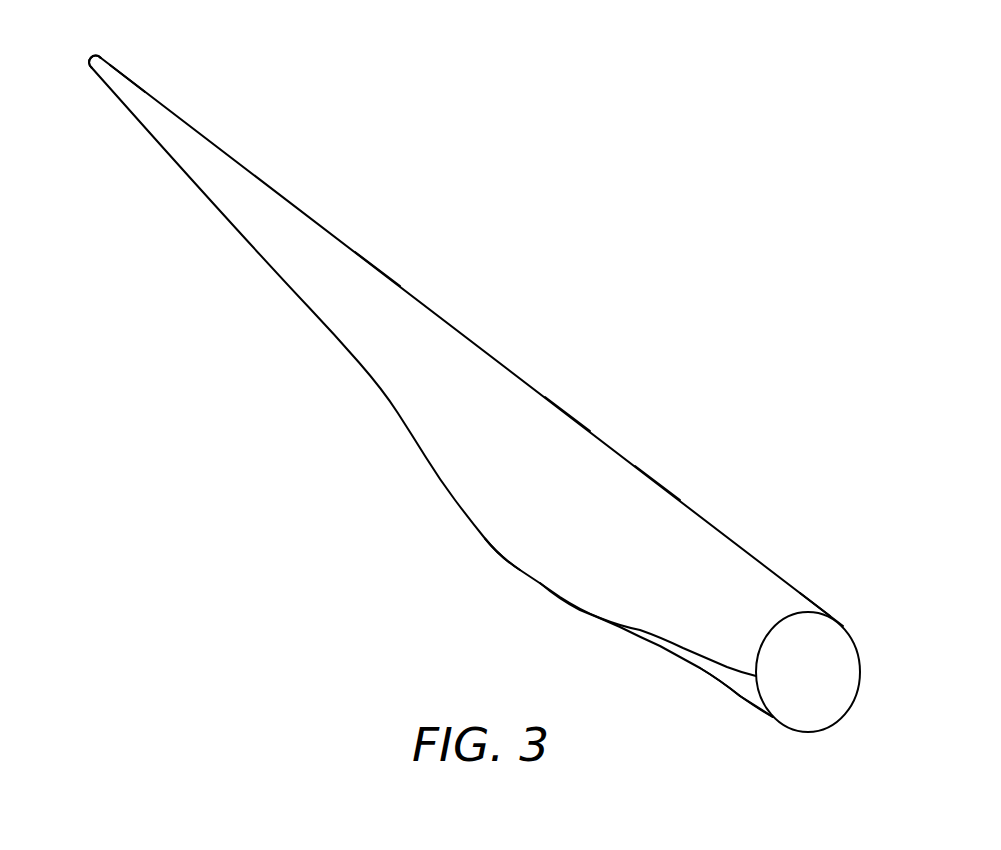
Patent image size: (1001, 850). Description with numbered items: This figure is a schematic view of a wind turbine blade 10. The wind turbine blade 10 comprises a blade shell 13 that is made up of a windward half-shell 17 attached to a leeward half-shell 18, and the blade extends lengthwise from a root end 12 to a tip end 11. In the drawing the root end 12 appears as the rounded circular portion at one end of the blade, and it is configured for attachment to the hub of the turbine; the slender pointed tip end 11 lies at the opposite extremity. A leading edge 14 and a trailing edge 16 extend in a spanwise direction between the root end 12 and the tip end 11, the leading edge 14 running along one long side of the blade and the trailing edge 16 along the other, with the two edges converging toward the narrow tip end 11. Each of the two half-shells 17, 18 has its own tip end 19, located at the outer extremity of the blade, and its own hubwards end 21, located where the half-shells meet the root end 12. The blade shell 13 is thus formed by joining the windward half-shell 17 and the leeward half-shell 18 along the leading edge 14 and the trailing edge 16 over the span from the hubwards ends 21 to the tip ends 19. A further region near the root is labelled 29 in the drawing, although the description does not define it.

The wind turbine blade 10 is at (290, 438).
The tip end 11 is at (93, 60).
The root end 12 is at (861, 650).
The blade shell 13 is at (376, 281).
The leading edge 14 is at (565, 410).
The trailing edge 16 is at (502, 555).
The windward half-shell 17 is at (657, 483).
The leeward half-shell 18 is at (723, 673).
The tip end of half-shell 19 is at (124, 85).
The hubwards end 21 is at (811, 607).
The shoulder 29 is at (772, 618).